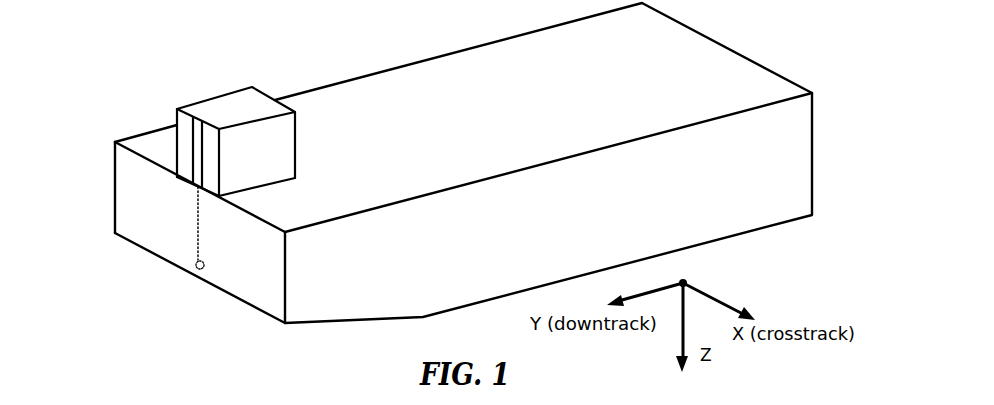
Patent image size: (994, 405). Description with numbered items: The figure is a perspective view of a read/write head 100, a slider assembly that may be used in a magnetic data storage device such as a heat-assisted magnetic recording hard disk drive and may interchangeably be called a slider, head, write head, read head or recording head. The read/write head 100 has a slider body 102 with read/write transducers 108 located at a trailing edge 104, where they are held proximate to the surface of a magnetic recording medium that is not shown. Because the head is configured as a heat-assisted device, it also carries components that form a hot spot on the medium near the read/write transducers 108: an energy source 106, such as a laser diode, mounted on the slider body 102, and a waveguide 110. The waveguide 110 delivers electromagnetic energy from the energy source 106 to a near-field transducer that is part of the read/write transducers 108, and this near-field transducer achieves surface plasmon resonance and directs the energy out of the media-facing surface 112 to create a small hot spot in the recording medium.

The read/write head 100 is at (451, 195).
The slider body 102 is at (410, 73).
The trailing edge 104 is at (117, 212).
The energy source 106 is at (200, 104).
The read/write transducers 108 is at (195, 300).
The waveguide 110 is at (197, 225).
The media-facing surface 112 is at (275, 325).